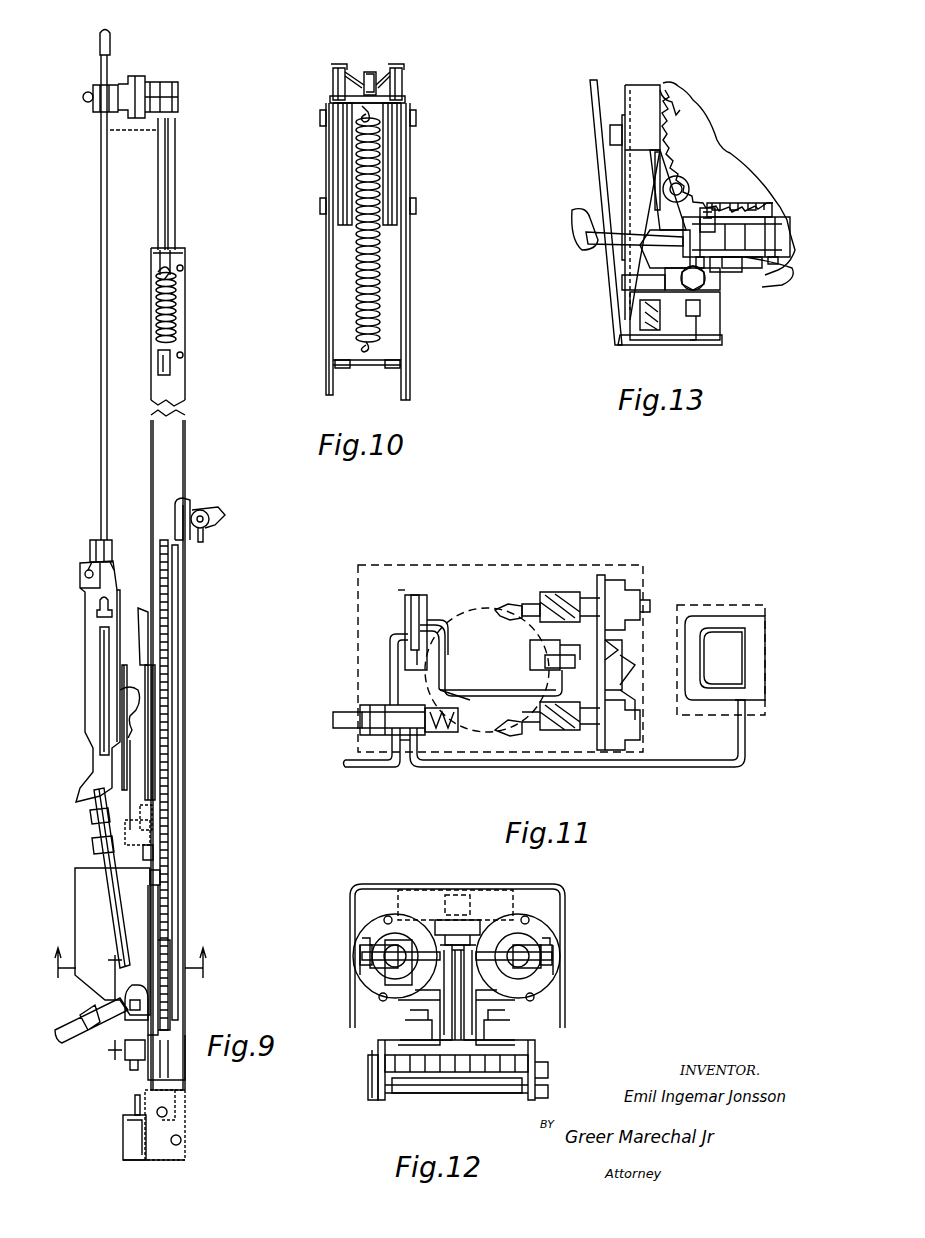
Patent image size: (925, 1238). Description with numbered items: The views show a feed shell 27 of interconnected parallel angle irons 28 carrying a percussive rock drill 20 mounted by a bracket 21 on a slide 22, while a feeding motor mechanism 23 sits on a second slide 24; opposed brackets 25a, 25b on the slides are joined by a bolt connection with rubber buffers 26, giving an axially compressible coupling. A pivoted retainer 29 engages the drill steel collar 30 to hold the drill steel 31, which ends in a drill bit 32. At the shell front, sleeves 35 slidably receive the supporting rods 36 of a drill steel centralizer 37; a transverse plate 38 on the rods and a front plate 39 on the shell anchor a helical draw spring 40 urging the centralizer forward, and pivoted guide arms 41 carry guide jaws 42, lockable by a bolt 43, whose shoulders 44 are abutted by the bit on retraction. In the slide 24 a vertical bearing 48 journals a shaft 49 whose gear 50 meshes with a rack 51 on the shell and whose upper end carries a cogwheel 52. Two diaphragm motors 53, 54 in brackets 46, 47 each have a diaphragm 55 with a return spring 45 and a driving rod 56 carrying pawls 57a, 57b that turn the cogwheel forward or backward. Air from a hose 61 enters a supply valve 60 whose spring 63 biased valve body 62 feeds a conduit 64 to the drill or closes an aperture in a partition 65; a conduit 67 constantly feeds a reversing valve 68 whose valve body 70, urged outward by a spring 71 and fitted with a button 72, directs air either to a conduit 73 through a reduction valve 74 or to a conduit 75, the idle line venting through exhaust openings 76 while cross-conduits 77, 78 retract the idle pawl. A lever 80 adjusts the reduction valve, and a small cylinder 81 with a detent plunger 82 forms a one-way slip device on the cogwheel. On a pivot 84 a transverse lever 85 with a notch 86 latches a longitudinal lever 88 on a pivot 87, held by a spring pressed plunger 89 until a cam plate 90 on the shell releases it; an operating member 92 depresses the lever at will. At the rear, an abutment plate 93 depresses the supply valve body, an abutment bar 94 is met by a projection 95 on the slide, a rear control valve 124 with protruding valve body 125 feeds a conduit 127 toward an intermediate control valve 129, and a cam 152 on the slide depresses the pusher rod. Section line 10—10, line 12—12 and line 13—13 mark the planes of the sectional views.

In FIG. 9, the section line 10— 10 is at (112, 52).
In FIG. 9, the section line 12— 12 is at (130, 963).
In FIG. 9, the section line 13— 13 is at (106, 1001).
In FIG. 9, the rock drill 20 is at (94, 682).
In FIG. 11, the rock drill 20 is at (748, 646).
In FIG. 9, the bracket 21 is at (160, 704).
In FIG. 9, the slide 22 is at (150, 754).
In FIG. 11, the slide 22 is at (720, 608).
In FIG. 9, the feeding motor mechanism 23 is at (86, 922).
In FIG. 13, the feeding motor mechanism 23 is at (580, 102).
In FIG. 12, the feeding motor mechanism 23 is at (342, 926).
In FIG. 9, the slide 24 is at (166, 922).
In FIG. 13, the slide 24 is at (642, 92).
In FIG. 11, the slide 24 is at (398, 590).
In FIG. 12, the slide 24 is at (500, 1042).
In FIG. 9, the bracket 25a is at (150, 817).
In FIG. 9, the bracket 25b is at (152, 854).
In FIG. 9, the rubber buffers 26 is at (152, 834).
In FIG. 9, the feed shell 27 is at (188, 494).
In FIG. 10, the feed shell 27 is at (412, 264).
In FIG. 12, the feed shell 27 is at (540, 1082).
In FIG. 9, the angle irons 28 is at (157, 393).
In FIG. 10, the angle irons 28 is at (330, 314).
In FIG. 12, the angle irons 28 is at (395, 1047).
In FIG. 9, the retainer 29 is at (92, 545).
In FIG. 9, the drill steel collar 30 is at (92, 562).
In FIG. 9, the drill steel 31 is at (100, 316).
In FIG. 9, the drill bit 32 is at (99, 38).
In FIG. 10, the drill bit 32 is at (368, 68).
In FIG. 10, the sleeves 35 is at (335, 160).
In FIG. 9, the supporting rods 36 is at (176, 155).
In FIG. 10, the supporting rods 36 is at (345, 192).
In FIG. 9, the drill steel centralizer 37 is at (162, 100).
In FIG. 10, the drill steel centralizer 37 is at (380, 85).
In FIG. 9, the transverse plate 38 is at (172, 378).
In FIG. 10, the transverse plate 38 is at (375, 362).
In FIG. 9, the front plate 39 is at (172, 246).
In FIG. 10, the front plate 39 is at (372, 106).
In FIG. 9, the helical draw spring 40 is at (178, 318).
In FIG. 10, the helical draw spring 40 is at (360, 245).
In FIG. 9, the guide arms 41 is at (120, 90).
In FIG. 10, the guide jaws 42 is at (355, 84).
In FIG. 9, the bolt 43 is at (86, 98).
In FIG. 10, the shoulders 44 is at (392, 72).
In FIG. 11, the return spring 45 is at (598, 600).
In FIG. 12, the bracket 46 is at (392, 990).
In FIG. 12, the bracket 47 is at (520, 990).
In FIG. 12, the vertical bearing 48 is at (440, 1015).
In FIG. 12, the shaft 49 is at (475, 1015).
In FIG. 9, the gear 50 is at (165, 977).
In FIG. 12, the gear 50 is at (492, 1060).
In FIG. 9, the rack 51 is at (165, 630).
In FIG. 12, the rack 51 is at (385, 1080).
In FIG. 13, the cogwheel 52 is at (692, 130).
In FIG. 11, the cogwheel 52 is at (468, 622).
In FIG. 12, the cogwheel 52 is at (420, 960).
In FIG. 11, the diaphragm motor 53 is at (560, 600).
In FIG. 12, the diaphragm motor 53 is at (395, 955).
In FIG. 11, the diaphragm motor 54 is at (557, 732).
In FIG. 12, the diaphragm motor 54 is at (515, 955).
In FIG. 11, the diaphragm 55 is at (615, 590).
In FIG. 11, the driving rod 56 is at (520, 606).
In FIG. 13, the pawl 57a is at (662, 96).
In FIG. 11, the pawl 57a is at (498, 618).
In FIG. 12, the pawl 57a is at (390, 957).
In FIG. 11, the pawl 57b is at (517, 724).
In FIG. 12, the pawl 57b is at (520, 957).
In FIG. 11, the supply valve 60 is at (368, 710).
In FIG. 9, the hose 61 is at (58, 1038).
In FIG. 11, the hose 61 is at (364, 770).
In FIG. 9, the valve body 62 is at (130, 1055).
In FIG. 11, the valve body 62 is at (360, 732).
In FIG. 11, the biasing spring 63 is at (442, 740).
In FIG. 9, the conduit 64 is at (125, 868).
In FIG. 11, the conduit 64 is at (482, 770).
In FIG. 11, the partition 65 is at (402, 770).
In FIG. 13, the conduit 67 is at (777, 276).
In FIG. 11, the conduit 67 is at (388, 662).
In FIG. 13, the reversing valve 68 is at (752, 268).
In FIG. 11, the reversing valve 68 is at (400, 626).
In FIG. 13, the valve body 70 is at (747, 260).
In FIG. 11, the valve body 70 is at (406, 604).
In FIG. 13, the biasing spring 71 is at (784, 240).
In FIG. 13, the button 72 is at (702, 216).
In FIG. 11, the button 72 is at (410, 596).
In FIG. 13, the conduit 73 is at (727, 206).
In FIG. 11, the conduit 73 is at (434, 640).
In FIG. 11, the reduction valve 74 is at (632, 668).
In FIG. 13, the conduit 75 is at (754, 212).
In FIG. 11, the conduit 75 is at (452, 697).
In FIG. 13, the exhaust openings 76 is at (774, 255).
In FIG. 11, the cross-conduit 77 is at (622, 660).
In FIG. 11, the cross-conduit 78 is at (627, 682).
In FIG. 12, the lever 80 is at (452, 892).
In FIG. 11, the small cylinder 81 is at (535, 650).
In FIG. 11, the plunger 82 is at (545, 658).
In FIG. 13, the upstanding pivot 84 is at (698, 292).
In FIG. 13, the transverse lever 85 is at (635, 282).
In FIG. 13, the notch 86 is at (660, 277).
In FIG. 13, the pivot 87 is at (660, 205).
In FIG. 13, the longitudinal lever 88 is at (675, 236).
In FIG. 13, the spring pressed plunger 89 is at (640, 318).
In FIG. 9, the cam plate 90 is at (130, 636).
In FIG. 13, the cam plate 90 is at (630, 155).
In FIG. 13, the operating member 92 is at (582, 228).
In FIG. 9, the abutment plate 93 is at (130, 1132).
In FIG. 9, the abutment bar 94 is at (172, 1114).
In FIG. 9, the projection 95 is at (172, 1042).
In FIG. 9, the rear control valve 124 is at (128, 1154).
In FIG. 9, the valve body 125 is at (133, 1106).
In FIG. 9, the conduit 127 is at (175, 778).
In FIG. 9, the intermediate control valve 129 is at (212, 528).
In FIG. 9, the cam 152 is at (160, 882).